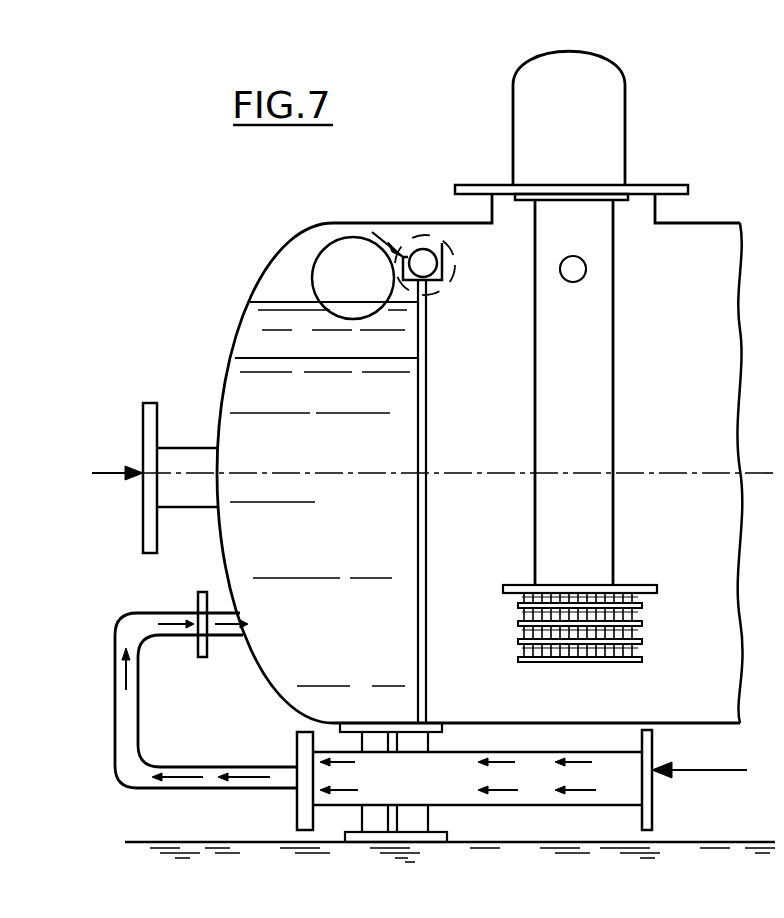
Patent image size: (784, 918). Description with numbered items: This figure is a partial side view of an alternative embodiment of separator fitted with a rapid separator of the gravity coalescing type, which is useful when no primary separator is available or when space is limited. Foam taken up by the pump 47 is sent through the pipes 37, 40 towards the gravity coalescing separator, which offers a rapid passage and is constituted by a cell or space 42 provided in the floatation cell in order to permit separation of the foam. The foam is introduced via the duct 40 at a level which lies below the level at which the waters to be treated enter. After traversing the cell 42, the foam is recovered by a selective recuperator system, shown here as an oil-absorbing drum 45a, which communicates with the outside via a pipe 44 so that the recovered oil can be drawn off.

The pipe 37 is at (453, 783).
The duct 40 is at (143, 612).
The cell 42 is at (283, 448).
The pipe 44 is at (422, 249).
The oil-absorbing drum 45a is at (322, 248).
The pump 47 is at (717, 771).